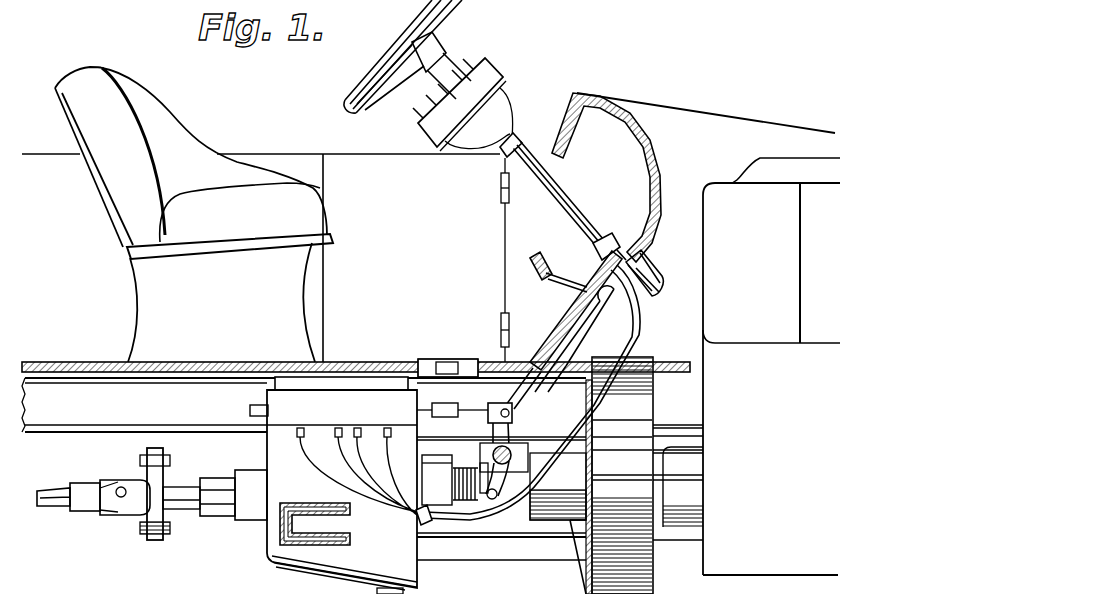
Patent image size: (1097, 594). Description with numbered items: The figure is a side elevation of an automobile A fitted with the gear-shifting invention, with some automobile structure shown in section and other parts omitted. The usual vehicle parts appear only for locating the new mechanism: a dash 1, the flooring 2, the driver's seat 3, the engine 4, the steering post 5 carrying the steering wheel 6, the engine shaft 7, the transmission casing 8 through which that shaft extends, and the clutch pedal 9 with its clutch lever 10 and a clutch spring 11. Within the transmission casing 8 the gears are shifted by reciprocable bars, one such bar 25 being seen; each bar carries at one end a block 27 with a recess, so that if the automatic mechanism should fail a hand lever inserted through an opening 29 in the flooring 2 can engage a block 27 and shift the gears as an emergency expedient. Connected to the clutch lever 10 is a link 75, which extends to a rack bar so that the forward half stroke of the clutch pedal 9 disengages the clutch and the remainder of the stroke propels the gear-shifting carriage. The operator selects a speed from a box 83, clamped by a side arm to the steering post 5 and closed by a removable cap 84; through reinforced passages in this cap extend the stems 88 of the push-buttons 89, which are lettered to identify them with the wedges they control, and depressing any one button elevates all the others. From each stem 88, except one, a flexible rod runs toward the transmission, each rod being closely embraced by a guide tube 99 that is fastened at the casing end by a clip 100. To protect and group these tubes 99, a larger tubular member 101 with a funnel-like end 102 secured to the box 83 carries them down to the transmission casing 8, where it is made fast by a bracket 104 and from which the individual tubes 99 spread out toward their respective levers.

The dash 1 is at (646, 228).
The flooring 2 is at (202, 369).
The driver's seat 3 is at (194, 214).
The engine 4 is at (771, 366).
The steering post 5 is at (567, 198).
The steering wheel 6 is at (352, 100).
The engine shaft 7 is at (664, 484).
The transmission casing 8 is at (268, 566).
The clutch pedal 9 is at (538, 258).
The clutch lever 10 is at (579, 333).
The clutch spring 11 is at (466, 505).
The slidable bar 25 is at (250, 410).
The block 27 is at (445, 401).
The opening 29 is at (447, 366).
The link 75 is at (478, 415).
The box 83 is at (496, 72).
The removable cap 84 is at (470, 61).
The stems 88 is at (413, 114).
The push-buttons 89 is at (431, 99).
The tube 99 is at (318, 472).
The clip 100 is at (340, 439).
The tubular member 101 is at (505, 157).
The funnel-like end 102 is at (497, 116).
The bracket 104 is at (418, 521).
The automobile A is at (706, 107).